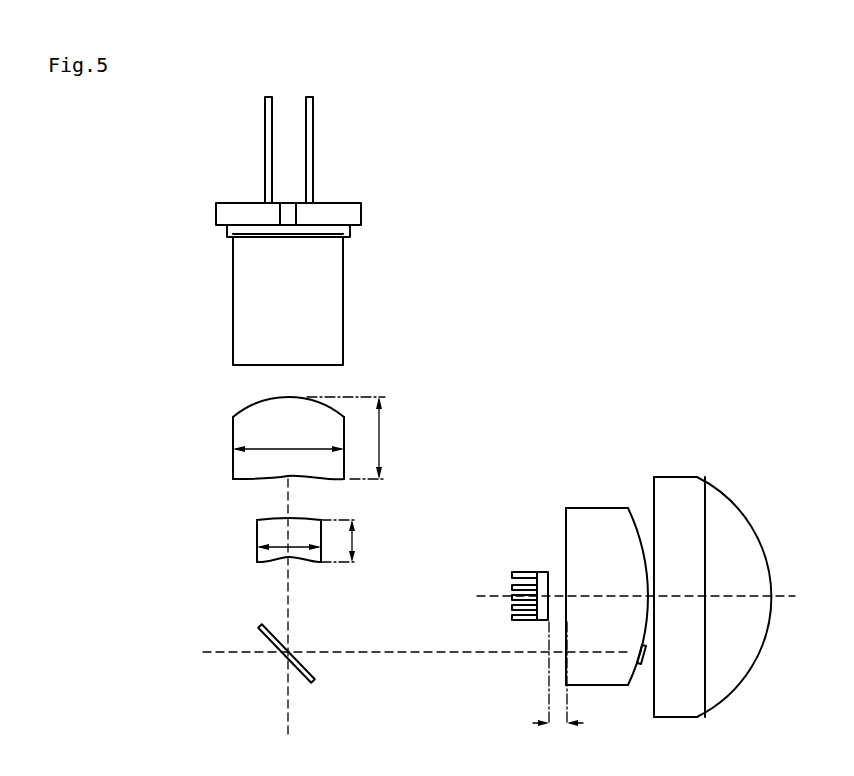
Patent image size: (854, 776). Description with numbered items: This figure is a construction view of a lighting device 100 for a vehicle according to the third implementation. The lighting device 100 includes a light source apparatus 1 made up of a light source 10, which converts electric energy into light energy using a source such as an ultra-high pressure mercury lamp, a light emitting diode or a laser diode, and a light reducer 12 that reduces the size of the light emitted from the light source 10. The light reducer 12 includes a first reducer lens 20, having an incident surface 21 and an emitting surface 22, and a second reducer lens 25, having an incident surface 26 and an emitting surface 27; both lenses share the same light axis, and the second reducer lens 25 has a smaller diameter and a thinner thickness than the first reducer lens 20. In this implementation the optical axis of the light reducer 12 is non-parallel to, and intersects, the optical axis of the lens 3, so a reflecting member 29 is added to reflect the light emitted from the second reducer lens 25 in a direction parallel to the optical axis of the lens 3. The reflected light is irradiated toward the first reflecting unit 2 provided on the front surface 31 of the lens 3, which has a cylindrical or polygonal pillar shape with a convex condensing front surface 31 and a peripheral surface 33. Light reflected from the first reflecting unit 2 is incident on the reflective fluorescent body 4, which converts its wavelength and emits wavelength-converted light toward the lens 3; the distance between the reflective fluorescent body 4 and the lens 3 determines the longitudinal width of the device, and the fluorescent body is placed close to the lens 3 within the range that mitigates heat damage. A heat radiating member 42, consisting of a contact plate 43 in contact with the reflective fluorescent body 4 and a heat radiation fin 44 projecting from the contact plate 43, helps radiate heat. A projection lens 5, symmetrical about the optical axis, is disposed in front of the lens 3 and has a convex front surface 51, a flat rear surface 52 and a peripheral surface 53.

The lighting device for a vehicle 100 is at (135, 133).
The light source apparatus 1 is at (132, 272).
The light source 10 is at (222, 296).
The light reducer 12 is at (160, 410).
The first reducer lens 20 is at (233, 435).
The incident surface 21 is at (253, 403).
The emitting surface 22 is at (268, 477).
The second reducer lens 25 is at (257, 530).
The incident surface 26 is at (307, 519).
The emitting surface 27 is at (283, 561).
The reflecting member 29 is at (310, 685).
The heat radiating member 42 is at (538, 518).
The contact plate 43 is at (540, 577).
The heat radiation fin 44 is at (512, 595).
The reflective fluorescent body 4 is at (543, 622).
The lens 3 is at (606, 686).
The front surface 31 is at (566, 518).
The peripheral surface 33 is at (588, 507).
The first reflecting unit 2 is at (644, 667).
The projection lens 5 is at (692, 627).
The front surface 51 is at (721, 705).
The rear surface 52 is at (650, 485).
The peripheral surface 53 is at (673, 703).